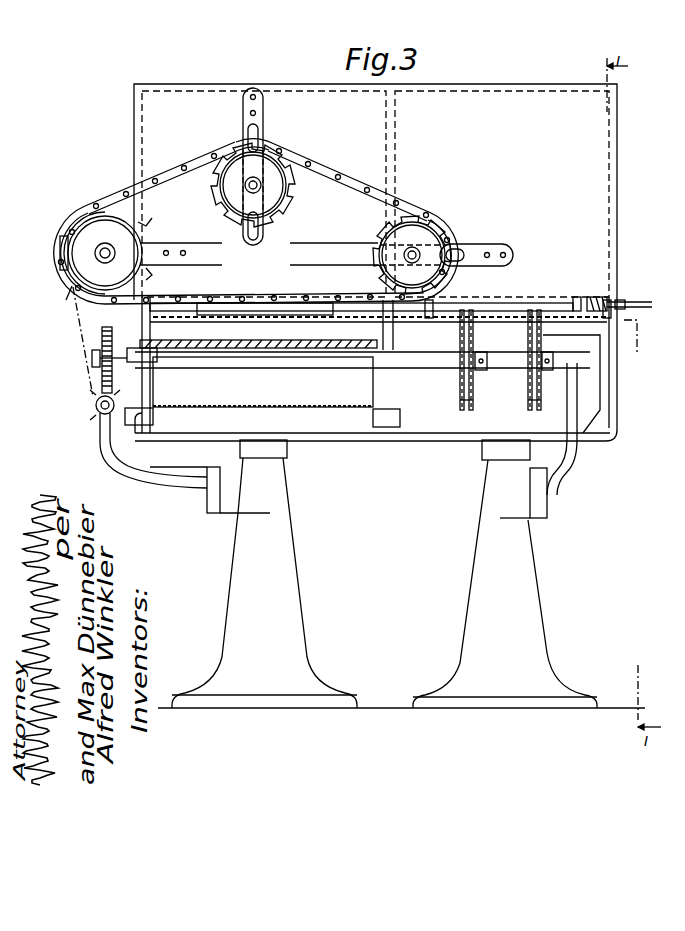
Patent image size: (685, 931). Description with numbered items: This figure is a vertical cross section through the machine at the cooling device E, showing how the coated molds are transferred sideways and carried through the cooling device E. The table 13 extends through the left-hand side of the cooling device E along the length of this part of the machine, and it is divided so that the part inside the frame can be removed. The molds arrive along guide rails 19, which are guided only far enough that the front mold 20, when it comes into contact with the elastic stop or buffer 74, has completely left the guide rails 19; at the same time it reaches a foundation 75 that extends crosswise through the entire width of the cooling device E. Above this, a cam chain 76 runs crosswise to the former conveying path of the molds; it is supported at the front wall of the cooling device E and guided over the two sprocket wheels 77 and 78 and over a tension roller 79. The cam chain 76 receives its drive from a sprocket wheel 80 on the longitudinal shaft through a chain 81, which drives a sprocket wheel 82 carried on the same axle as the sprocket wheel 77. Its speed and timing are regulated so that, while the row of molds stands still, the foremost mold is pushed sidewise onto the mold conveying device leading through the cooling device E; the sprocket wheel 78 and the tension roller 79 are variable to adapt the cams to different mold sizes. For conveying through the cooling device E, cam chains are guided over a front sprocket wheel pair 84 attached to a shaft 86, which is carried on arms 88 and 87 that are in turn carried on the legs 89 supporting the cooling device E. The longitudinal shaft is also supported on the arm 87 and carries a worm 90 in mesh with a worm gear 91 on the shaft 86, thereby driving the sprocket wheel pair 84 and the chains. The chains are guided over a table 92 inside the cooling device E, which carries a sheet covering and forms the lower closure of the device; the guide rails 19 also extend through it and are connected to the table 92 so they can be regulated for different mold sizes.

The table 13 is at (278, 345).
The guide rails 19 is at (437, 305).
The front mold 20 is at (242, 305).
The elastic stop or buffer 74 is at (578, 297).
The foundation 75 is at (320, 316).
The cam chain 76 is at (296, 158).
The sprocket wheel 77 is at (106, 211).
The sprocket wheel 78 is at (406, 216).
The tension roller 79 is at (237, 166).
The sprocket wheel 80 is at (105, 416).
The chain 81 is at (76, 328).
The sprocket wheel 82 is at (70, 288).
The sprocket wheel pair 84 is at (528, 396).
The shaft 86 is at (412, 362).
The arm 87 is at (150, 481).
The arm 88 is at (572, 475).
The legs 89 is at (237, 581).
The worm 90 is at (99, 413).
The worm gear 91 is at (102, 374).
The table 92 is at (513, 335).
The cooling device E is at (164, 93).